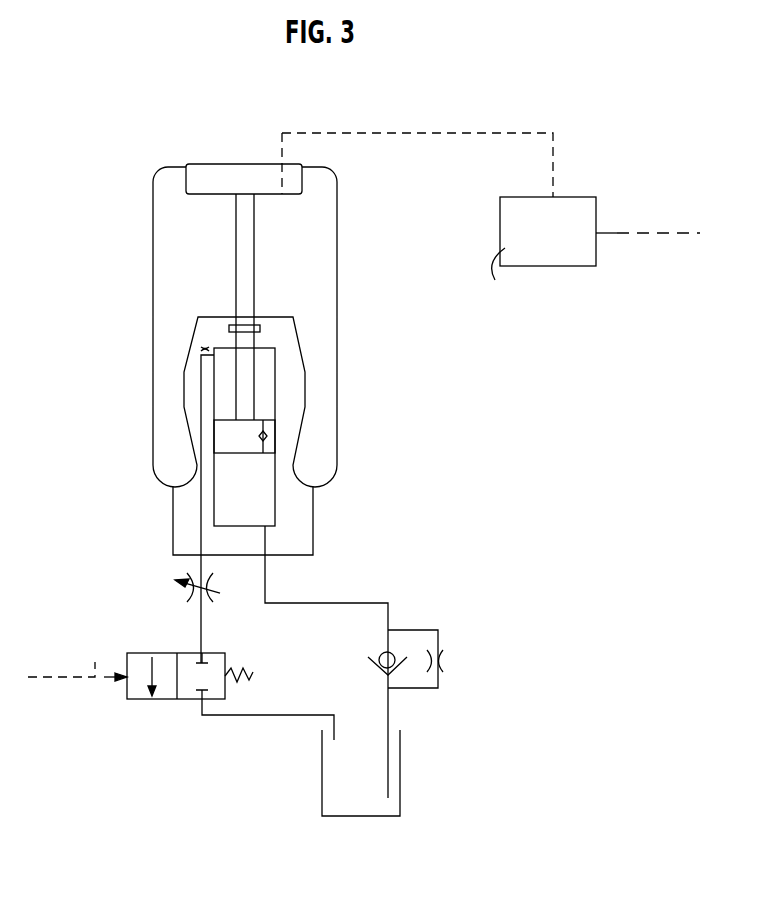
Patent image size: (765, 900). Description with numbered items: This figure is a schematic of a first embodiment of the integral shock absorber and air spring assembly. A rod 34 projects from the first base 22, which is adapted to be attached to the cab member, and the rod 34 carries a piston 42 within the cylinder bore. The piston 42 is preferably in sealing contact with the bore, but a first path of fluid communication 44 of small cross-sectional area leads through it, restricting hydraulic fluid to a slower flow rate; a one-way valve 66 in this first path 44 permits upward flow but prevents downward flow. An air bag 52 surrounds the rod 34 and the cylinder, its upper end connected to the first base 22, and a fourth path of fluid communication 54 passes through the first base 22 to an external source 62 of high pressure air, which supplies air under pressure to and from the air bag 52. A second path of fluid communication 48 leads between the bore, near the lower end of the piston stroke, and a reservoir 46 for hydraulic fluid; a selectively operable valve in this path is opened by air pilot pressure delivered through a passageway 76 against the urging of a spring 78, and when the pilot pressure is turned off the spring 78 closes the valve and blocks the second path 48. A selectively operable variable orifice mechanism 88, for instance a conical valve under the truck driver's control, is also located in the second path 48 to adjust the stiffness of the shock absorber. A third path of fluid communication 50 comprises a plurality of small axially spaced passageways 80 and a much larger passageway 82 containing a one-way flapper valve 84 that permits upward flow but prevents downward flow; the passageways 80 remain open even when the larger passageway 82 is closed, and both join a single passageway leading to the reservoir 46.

The first base 22 is at (218, 164).
The rod 34 is at (255, 284).
The piston 42 is at (237, 457).
The first path of fluid communication 44 is at (266, 440).
The reservoir 46 is at (322, 763).
The second path of fluid communication 48 is at (200, 517).
The third path of fluid communication 50 is at (389, 769).
The air bag 52 is at (338, 285).
The fourth path of fluid communication 54 is at (283, 195).
The external source of high pressure air 62 is at (596, 197).
The one-way valve 66 is at (267, 434).
The passageway 76 is at (96, 650).
The spring 78 is at (237, 668).
The small axially spaced passageways 80 is at (447, 661).
The larger passageway 82 is at (386, 678).
The one-way flapper valve 84 is at (384, 652).
The variable orifice mechanism 88 is at (210, 586).